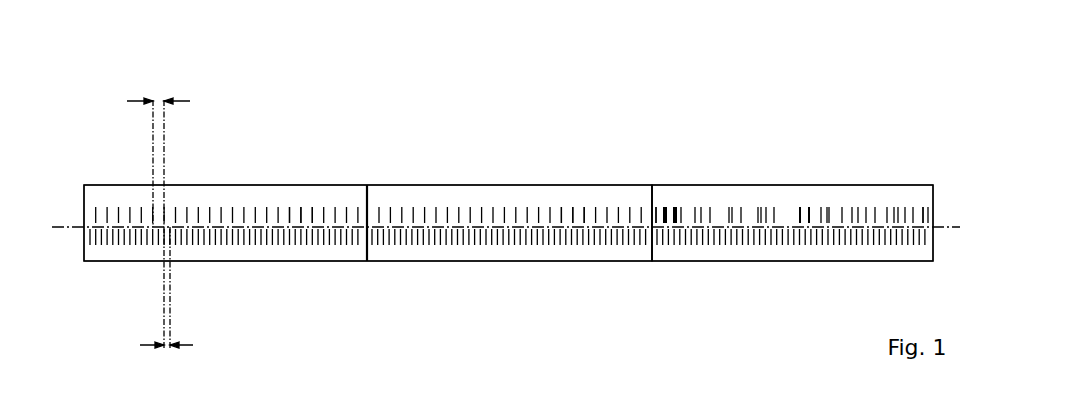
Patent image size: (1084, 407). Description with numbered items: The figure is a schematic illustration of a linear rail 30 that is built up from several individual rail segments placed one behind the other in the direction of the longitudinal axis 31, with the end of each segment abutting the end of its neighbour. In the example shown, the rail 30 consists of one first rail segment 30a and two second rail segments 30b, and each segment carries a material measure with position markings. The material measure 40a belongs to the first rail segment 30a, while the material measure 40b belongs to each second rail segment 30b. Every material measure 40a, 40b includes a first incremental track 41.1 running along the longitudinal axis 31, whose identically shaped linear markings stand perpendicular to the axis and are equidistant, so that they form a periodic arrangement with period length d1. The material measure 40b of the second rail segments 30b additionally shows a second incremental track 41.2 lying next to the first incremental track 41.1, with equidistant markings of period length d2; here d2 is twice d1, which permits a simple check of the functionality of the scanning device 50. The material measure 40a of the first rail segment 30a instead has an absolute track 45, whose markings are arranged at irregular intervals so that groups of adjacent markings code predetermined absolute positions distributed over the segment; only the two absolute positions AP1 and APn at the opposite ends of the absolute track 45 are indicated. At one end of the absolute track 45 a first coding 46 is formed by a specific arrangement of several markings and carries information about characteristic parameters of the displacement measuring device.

The rail 30 is at (897, 32).
The first rail segment 30a is at (668, 258).
The second rail segment 30b is at (92, 258).
The longitudinal axis 31 is at (62, 225).
The material measure 40a is at (749, 188).
The material measure 40b is at (223, 194).
The first incremental track 41.1 is at (262, 238).
The second incremental track 41.2 is at (302, 212).
The absolute track 45 is at (800, 207).
The first coding 46 is at (670, 193).
The predetermined absolute position APn is at (661, 176).
The predetermined absolute position AP1 is at (923, 176).
The period length d1 is at (167, 350).
The period length d2 is at (158, 100).
The scanning device 50 is at (503, 404).